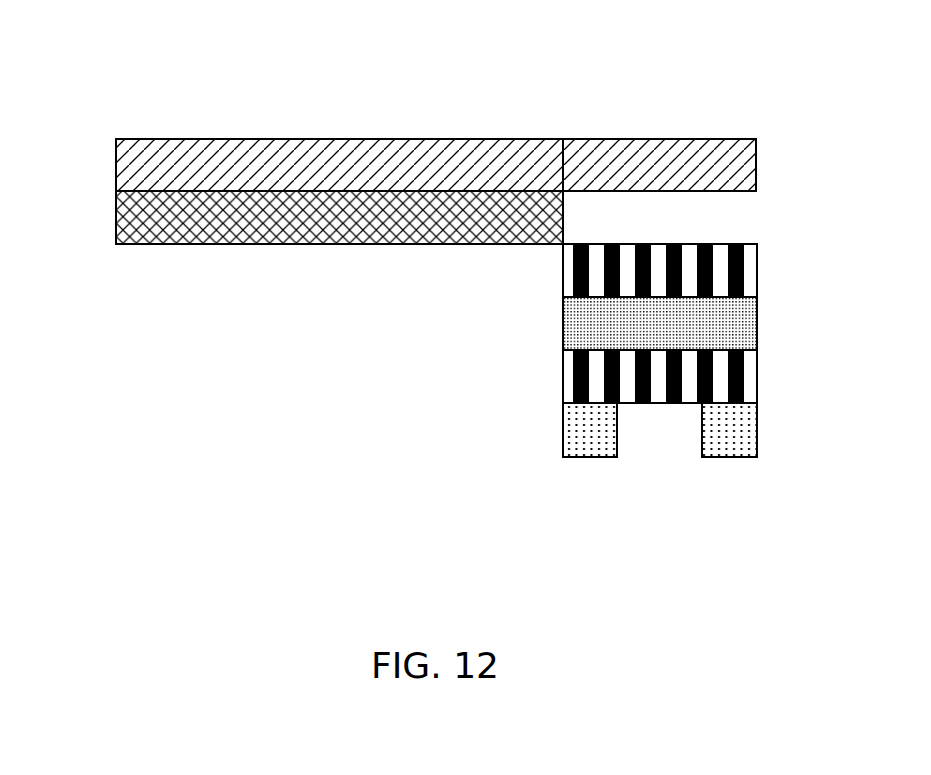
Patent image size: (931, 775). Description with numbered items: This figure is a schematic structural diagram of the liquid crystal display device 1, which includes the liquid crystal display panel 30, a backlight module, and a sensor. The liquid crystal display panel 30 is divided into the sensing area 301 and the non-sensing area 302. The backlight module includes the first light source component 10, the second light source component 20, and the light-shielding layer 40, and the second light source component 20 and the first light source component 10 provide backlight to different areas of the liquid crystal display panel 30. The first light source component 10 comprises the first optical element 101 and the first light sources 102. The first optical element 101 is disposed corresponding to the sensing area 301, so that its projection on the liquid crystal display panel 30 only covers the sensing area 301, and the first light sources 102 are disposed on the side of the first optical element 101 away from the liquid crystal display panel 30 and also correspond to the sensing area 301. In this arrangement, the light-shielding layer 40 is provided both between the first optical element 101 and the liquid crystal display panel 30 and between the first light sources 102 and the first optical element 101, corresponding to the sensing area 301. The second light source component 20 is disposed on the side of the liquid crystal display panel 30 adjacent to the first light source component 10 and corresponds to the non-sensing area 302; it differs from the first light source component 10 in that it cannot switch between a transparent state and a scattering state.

The liquid crystal display device 1 is at (426, 57).
The first light source component 10 is at (643, 518).
The first optical element 101 is at (618, 328).
The first light sources 102 is at (730, 445).
The second light source component 20 is at (145, 219).
The liquid crystal display panel 30 is at (628, 98).
The sensing area 301 is at (626, 139).
The non-sensing area 302 is at (496, 138).
The light-shielding layer 40 is at (743, 273).